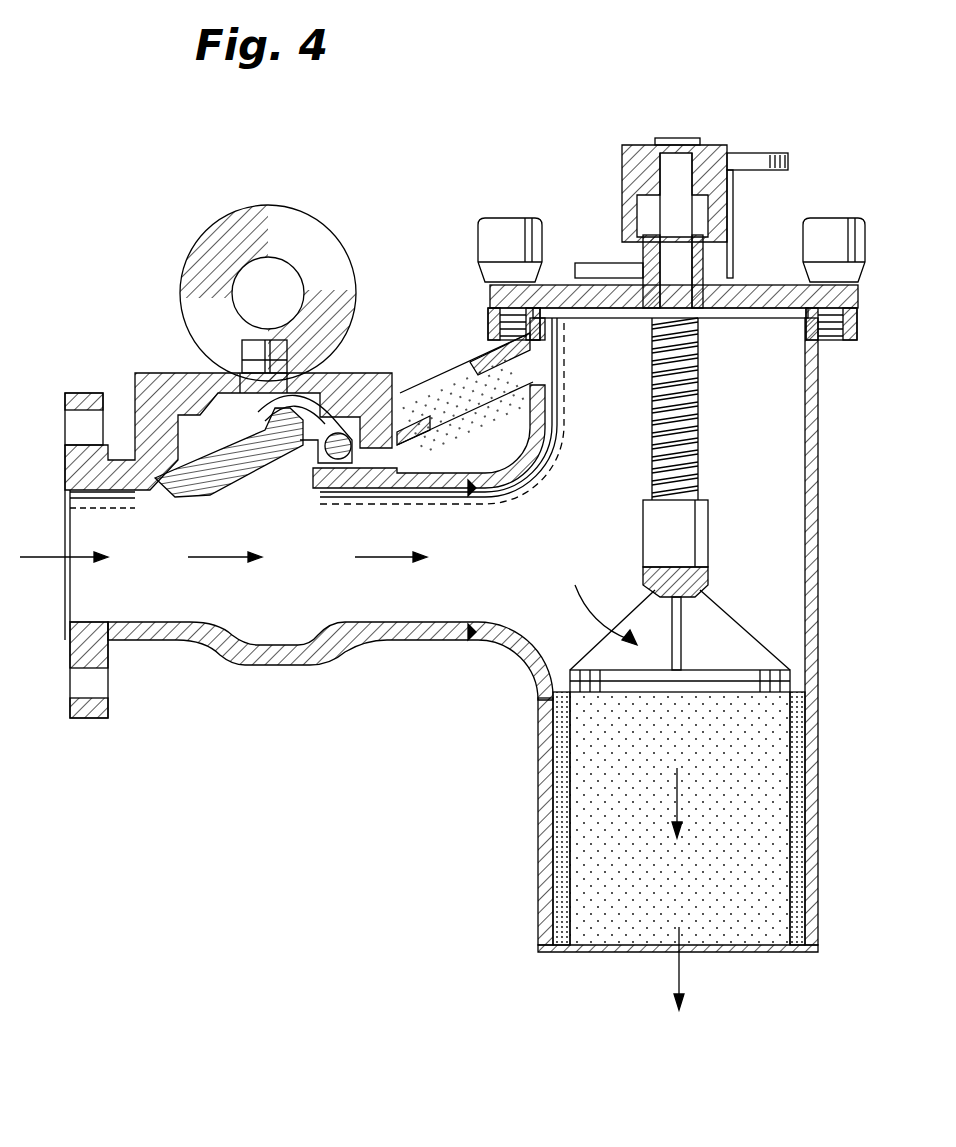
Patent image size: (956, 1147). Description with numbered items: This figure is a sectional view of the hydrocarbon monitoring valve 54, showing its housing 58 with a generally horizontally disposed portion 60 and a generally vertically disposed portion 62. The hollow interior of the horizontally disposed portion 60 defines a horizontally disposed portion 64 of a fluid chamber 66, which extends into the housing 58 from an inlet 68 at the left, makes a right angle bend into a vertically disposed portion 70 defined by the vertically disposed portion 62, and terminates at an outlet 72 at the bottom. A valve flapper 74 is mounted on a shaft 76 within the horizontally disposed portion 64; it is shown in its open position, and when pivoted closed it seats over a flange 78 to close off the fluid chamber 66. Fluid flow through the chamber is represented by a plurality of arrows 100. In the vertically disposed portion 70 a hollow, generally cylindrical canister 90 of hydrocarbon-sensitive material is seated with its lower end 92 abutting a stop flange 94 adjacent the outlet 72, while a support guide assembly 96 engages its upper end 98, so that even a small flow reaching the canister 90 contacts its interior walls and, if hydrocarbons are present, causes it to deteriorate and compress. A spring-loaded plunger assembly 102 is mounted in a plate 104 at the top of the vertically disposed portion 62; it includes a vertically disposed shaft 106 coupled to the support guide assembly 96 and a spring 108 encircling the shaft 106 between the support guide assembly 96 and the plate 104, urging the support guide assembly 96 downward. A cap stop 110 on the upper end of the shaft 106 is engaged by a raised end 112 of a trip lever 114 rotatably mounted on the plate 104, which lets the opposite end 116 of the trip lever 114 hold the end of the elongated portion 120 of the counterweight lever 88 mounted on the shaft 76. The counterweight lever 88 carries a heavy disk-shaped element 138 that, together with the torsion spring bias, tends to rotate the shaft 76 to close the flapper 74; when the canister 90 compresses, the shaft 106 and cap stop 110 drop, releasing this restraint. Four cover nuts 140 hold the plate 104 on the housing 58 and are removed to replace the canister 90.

The hydrocarbon monitoring valve 54 is at (438, 750).
The housing 58 is at (438, 640).
The horizontally disposed portion of the housing 60 is at (137, 641).
The vertically disposed portion of the housing 62 is at (820, 577).
The horizontally disposed portion of the fluid chamber 64 is at (247, 637).
The fluid chamber 66 is at (552, 562).
The inlet 68 is at (65, 620).
The vertically disposed portion of the fluid chamber 70 is at (712, 938).
The outlet 72 is at (607, 952).
The valve flapper 74 is at (228, 478).
The shaft 76 is at (372, 453).
The flange 78 is at (305, 655).
The counterweight lever 88 is at (460, 392).
The canister 90 is at (560, 728).
The lower end of the canister 92 is at (790, 935).
The flange 94 is at (793, 950).
The support guide assembly 96 is at (700, 540).
The upper end of the canister 98 is at (785, 697).
The arrows 100 is at (208, 560).
The spring-loaded plunger assembly 102 is at (693, 397).
The plate 104 is at (733, 285).
The shaft 106 is at (668, 390).
The spring 108 is at (700, 447).
The cap stop 110 is at (620, 170).
The raised end of the trip lever 112 is at (772, 156).
The trip lever 114 is at (725, 252).
The opposite end of the trip lever 116 is at (602, 263).
The elongated portion of the counterweight lever 120 is at (470, 405).
The disk-shaped element 138 is at (345, 280).
The cover nuts 140 is at (492, 223).